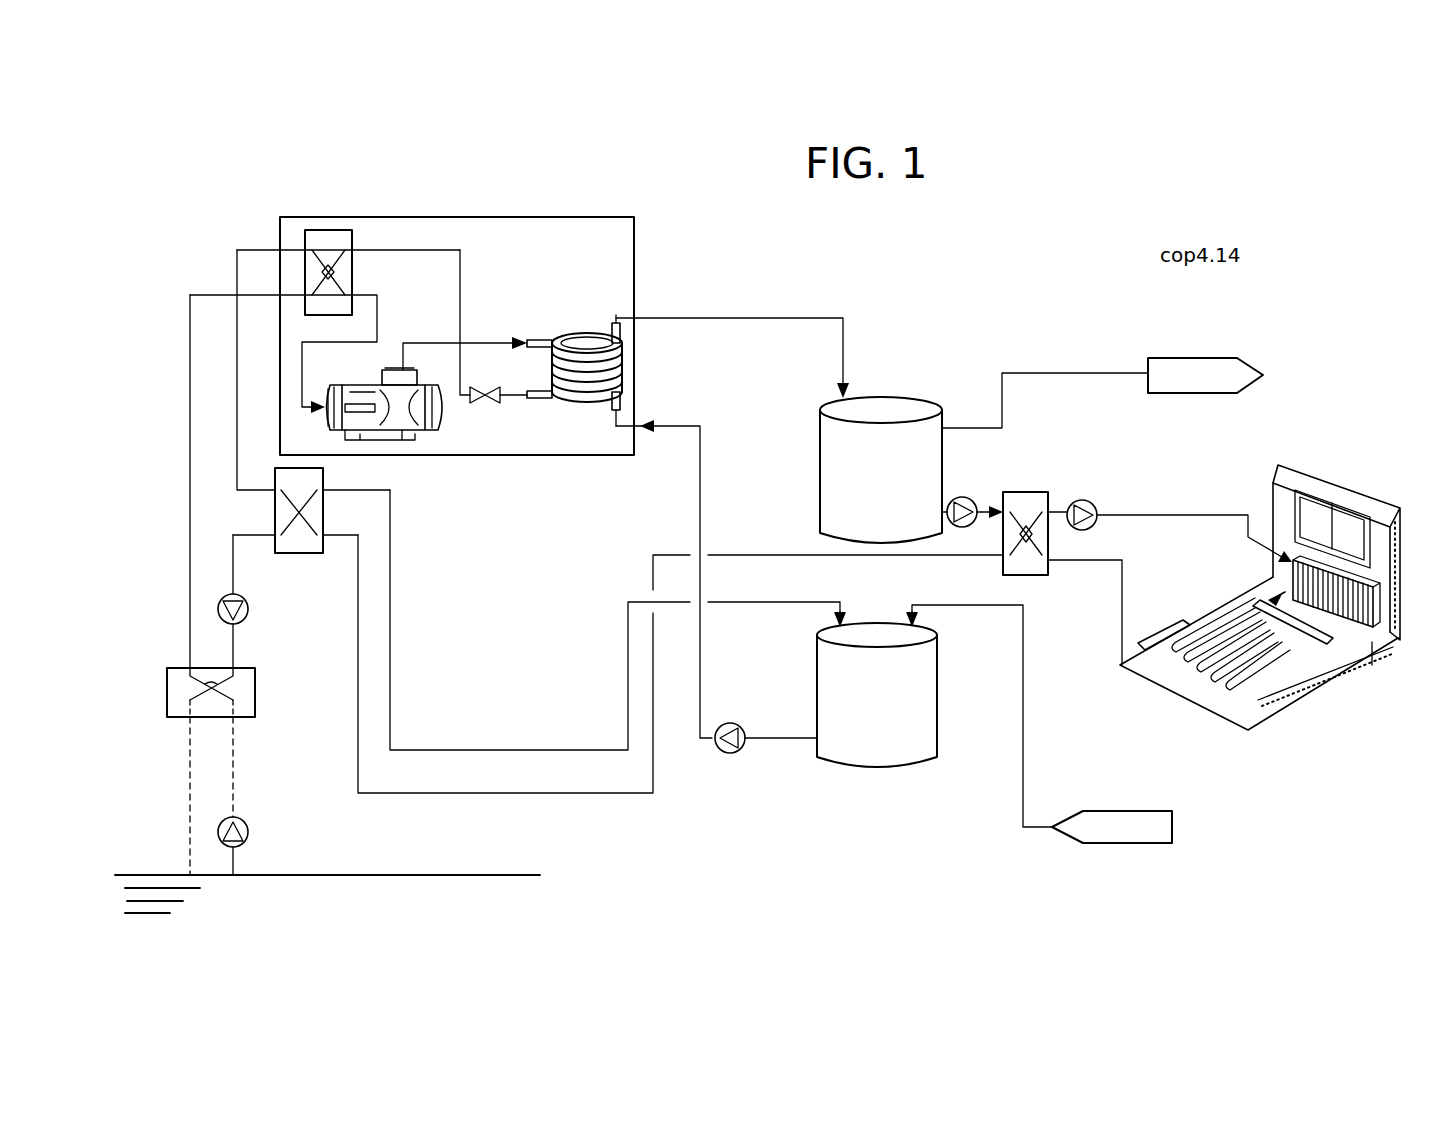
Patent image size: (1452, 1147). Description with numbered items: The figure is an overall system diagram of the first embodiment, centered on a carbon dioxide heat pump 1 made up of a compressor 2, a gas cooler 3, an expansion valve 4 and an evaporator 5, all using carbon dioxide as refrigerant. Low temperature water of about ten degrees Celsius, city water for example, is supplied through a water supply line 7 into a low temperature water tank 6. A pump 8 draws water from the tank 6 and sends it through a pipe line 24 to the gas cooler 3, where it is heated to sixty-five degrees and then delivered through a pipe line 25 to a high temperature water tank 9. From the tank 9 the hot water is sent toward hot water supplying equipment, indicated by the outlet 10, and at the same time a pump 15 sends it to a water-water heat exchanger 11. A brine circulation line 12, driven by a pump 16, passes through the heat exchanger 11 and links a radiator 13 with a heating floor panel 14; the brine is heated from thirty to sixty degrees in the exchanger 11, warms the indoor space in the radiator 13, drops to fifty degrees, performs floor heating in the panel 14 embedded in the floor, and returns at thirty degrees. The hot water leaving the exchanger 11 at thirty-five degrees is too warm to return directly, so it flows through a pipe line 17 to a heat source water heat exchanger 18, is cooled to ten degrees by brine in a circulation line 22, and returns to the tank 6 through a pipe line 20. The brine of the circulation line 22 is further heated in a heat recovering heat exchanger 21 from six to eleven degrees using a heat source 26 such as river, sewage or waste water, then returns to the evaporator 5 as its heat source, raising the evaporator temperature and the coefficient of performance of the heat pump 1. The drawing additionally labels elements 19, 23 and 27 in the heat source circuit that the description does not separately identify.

The CO2 heat pump 1 is at (490, 213).
The compressor 2 is at (440, 418).
The gas cooler 3 is at (587, 337).
The expansion valve 4 is at (484, 387).
The evaporator 5 is at (352, 275).
The low temperature water tank 6 is at (891, 762).
The water supply line 7 is at (1023, 732).
The pump 8 is at (725, 755).
The high temperature water tank 9 is at (893, 408).
The hot water supply pipe 10 is at (1083, 372).
The water-water heat exchanger 11 is at (1028, 492).
The brine circulation line 12 is at (1122, 595).
The radiator 13 is at (1345, 556).
The heating floor panel 14 is at (1264, 650).
The pump 15 is at (957, 527).
The pump 16 is at (1077, 494).
The pipe line 17 is at (626, 625).
The heat source water heat exchanger 18 is at (313, 482).
The well pump 19 is at (248, 832).
The pipe line 20 is at (608, 795).
The heat recovering heat exchanger 21 is at (255, 690).
The circulation line 22 is at (188, 514).
The well 23 is at (188, 800).
The pipe line 24 is at (698, 522).
The pipe line 25 is at (754, 314).
The river water, sewage water, waste water 26 is at (475, 875).
The pump 27 is at (243, 600).